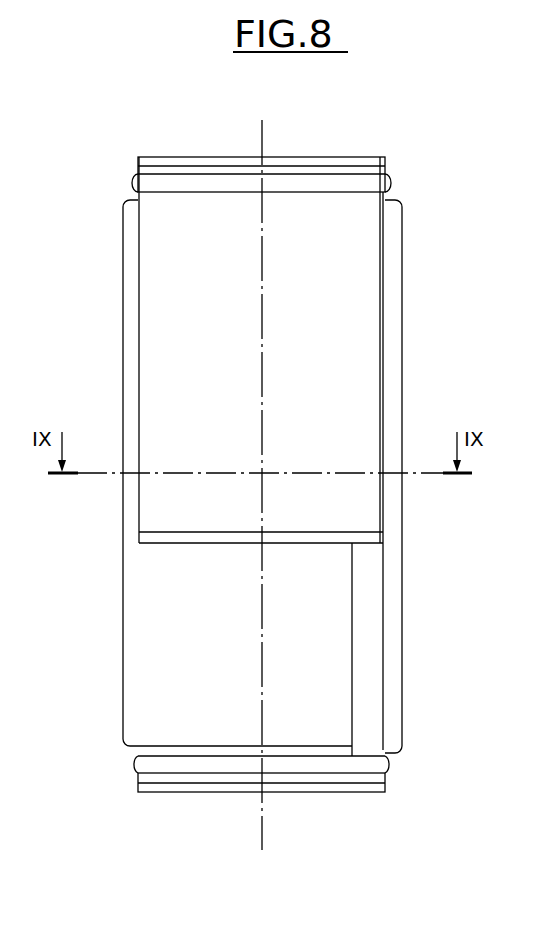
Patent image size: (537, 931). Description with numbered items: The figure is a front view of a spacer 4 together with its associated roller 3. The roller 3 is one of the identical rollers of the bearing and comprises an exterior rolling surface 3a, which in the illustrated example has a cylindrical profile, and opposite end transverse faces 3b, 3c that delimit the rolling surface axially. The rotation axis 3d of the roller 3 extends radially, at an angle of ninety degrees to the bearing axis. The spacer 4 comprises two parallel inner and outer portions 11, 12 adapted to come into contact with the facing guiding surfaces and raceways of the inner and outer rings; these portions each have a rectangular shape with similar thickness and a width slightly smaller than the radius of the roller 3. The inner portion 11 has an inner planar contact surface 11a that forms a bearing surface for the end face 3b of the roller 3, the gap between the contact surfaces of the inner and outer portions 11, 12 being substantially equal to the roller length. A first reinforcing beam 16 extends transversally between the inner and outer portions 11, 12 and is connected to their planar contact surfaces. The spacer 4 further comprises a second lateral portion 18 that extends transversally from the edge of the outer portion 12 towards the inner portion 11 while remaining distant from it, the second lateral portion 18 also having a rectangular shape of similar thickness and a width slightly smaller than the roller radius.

The spacer 4 is at (147, 130).
The roller 3 is at (234, 510).
The exterior rolling surface 3a is at (122, 323).
The end transverse face 3b is at (283, 756).
The end transverse face 3c is at (395, 193).
The rotation axis 3d is at (264, 134).
The inner portion 11 is at (126, 766).
The inner planar contact surface 11a is at (327, 746).
The outer portion 12 is at (125, 181).
The first reinforcing beam 16 is at (372, 597).
The second lateral portion 18 is at (253, 383).